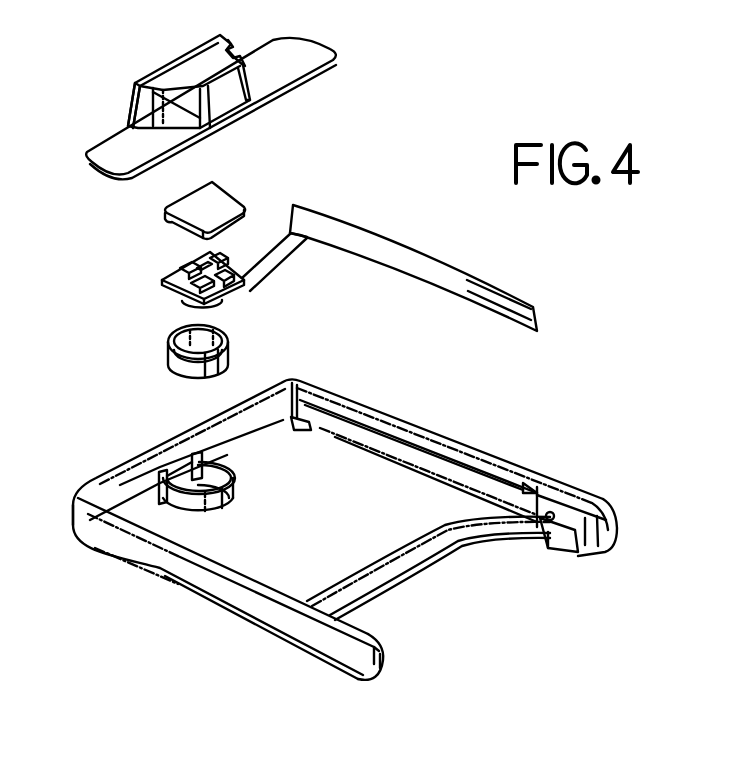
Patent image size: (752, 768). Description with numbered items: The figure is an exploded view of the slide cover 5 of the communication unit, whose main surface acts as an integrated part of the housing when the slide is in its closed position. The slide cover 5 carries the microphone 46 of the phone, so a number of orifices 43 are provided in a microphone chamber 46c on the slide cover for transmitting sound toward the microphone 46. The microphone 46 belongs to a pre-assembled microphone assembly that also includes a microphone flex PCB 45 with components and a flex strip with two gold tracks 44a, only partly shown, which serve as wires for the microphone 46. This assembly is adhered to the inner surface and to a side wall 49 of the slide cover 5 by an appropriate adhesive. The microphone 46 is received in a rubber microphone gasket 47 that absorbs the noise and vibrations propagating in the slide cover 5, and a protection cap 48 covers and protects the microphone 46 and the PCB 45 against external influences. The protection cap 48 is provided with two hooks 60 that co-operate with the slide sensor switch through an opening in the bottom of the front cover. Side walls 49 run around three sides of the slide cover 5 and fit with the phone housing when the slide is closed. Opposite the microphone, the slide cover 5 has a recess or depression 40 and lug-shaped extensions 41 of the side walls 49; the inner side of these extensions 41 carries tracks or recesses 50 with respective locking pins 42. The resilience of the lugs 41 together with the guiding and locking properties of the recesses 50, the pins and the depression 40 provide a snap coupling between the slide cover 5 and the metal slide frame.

The slide cover 5 is at (237, 552).
The recess or depression 40 is at (383, 567).
The lug-shaped extensions 41 is at (613, 532).
The locking pins 42 is at (545, 545).
The orifices 43 is at (190, 477).
The gold tracks 44a is at (518, 295).
The microphone flex PCB 45 is at (164, 272).
The microphone 46 is at (220, 301).
The microphone chamber 46c is at (235, 485).
The rubber microphone gasket 47 is at (170, 360).
The protection cap 48 is at (277, 113).
The side walls 49 is at (140, 553).
The tracks or recesses 50 is at (582, 525).
The hooks 60 is at (130, 100).